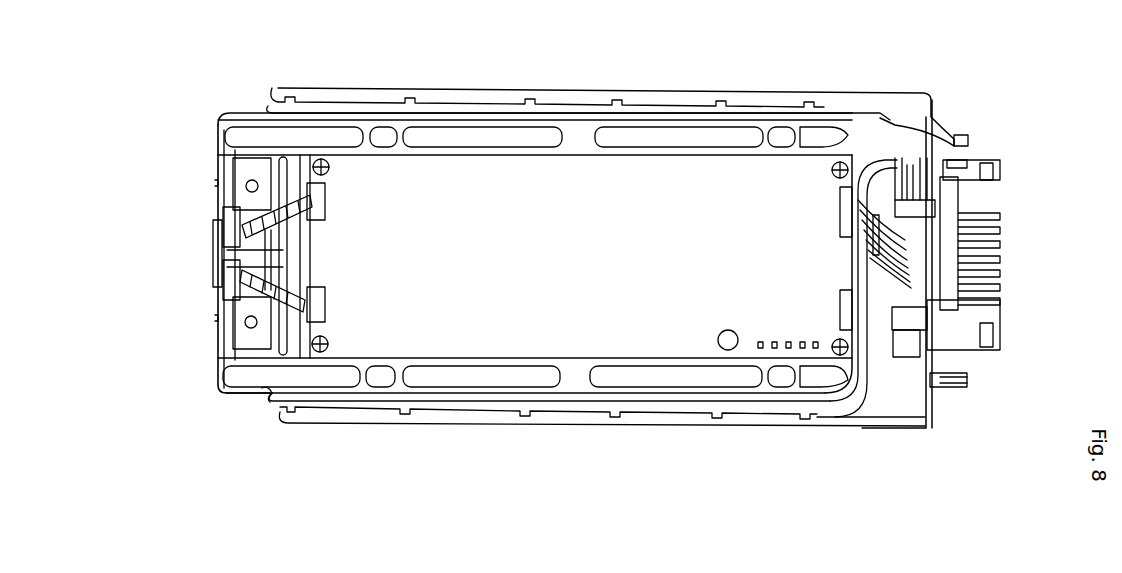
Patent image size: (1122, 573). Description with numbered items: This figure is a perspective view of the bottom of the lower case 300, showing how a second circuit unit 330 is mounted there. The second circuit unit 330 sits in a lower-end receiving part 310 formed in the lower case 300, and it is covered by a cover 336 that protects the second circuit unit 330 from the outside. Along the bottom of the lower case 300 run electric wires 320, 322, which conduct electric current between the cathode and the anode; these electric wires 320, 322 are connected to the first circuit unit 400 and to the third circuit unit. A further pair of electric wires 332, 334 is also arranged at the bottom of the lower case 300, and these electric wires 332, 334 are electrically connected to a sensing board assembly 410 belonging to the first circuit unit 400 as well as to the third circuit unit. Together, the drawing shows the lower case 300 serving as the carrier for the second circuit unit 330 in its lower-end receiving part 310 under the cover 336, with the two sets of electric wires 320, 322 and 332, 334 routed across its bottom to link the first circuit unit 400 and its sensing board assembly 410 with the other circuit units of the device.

The lower case 300 is at (383, 424).
The lower-end receiving part 310 is at (578, 380).
The electric wire 320 is at (873, 115).
The electric wire 322 is at (850, 402).
The second circuit unit 330 is at (369, 148).
The electric wire 332 is at (262, 392).
The electric wire 334 is at (897, 237).
The cover 336 is at (558, 180).
The first circuit unit 400 is at (196, 209).
The sensing board assembly 410 is at (221, 297).